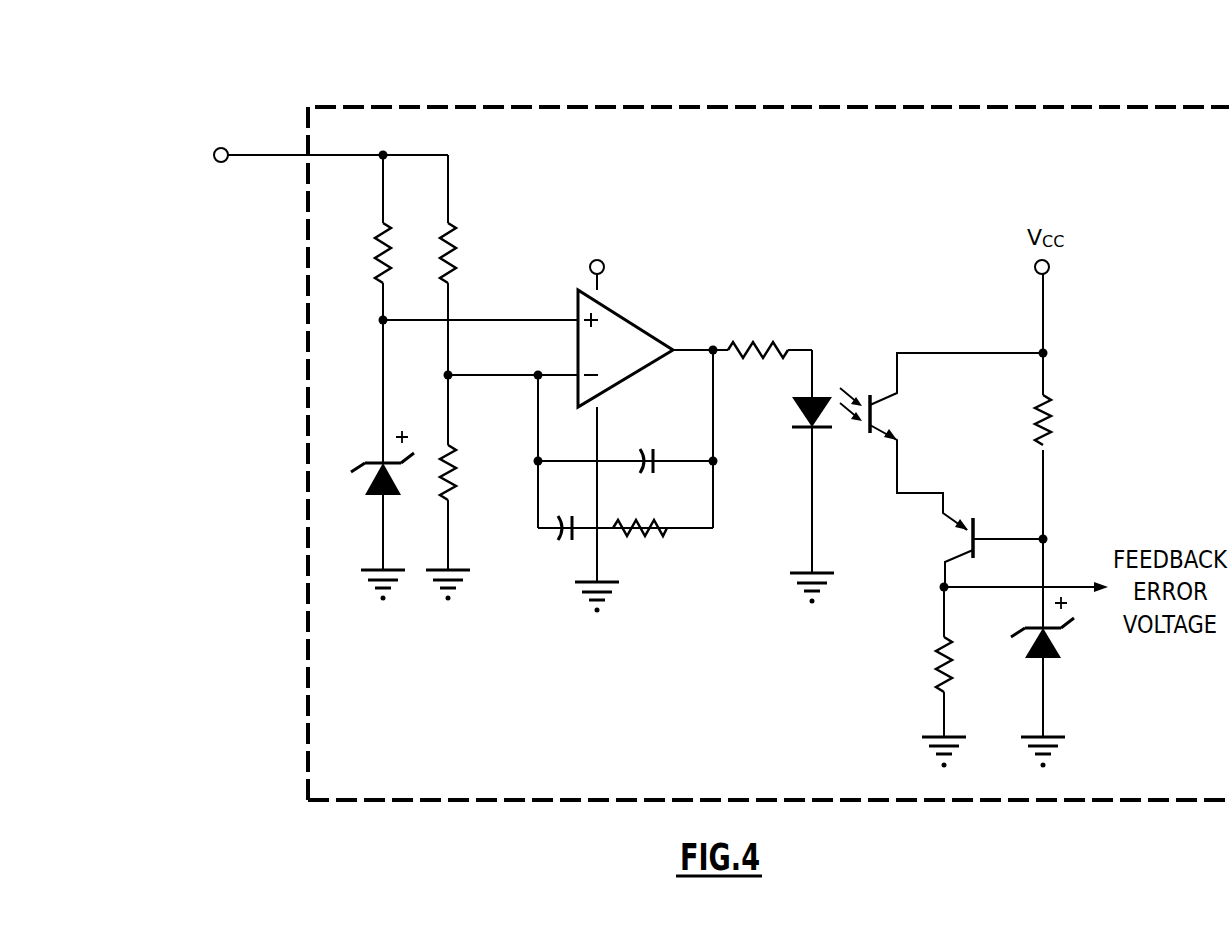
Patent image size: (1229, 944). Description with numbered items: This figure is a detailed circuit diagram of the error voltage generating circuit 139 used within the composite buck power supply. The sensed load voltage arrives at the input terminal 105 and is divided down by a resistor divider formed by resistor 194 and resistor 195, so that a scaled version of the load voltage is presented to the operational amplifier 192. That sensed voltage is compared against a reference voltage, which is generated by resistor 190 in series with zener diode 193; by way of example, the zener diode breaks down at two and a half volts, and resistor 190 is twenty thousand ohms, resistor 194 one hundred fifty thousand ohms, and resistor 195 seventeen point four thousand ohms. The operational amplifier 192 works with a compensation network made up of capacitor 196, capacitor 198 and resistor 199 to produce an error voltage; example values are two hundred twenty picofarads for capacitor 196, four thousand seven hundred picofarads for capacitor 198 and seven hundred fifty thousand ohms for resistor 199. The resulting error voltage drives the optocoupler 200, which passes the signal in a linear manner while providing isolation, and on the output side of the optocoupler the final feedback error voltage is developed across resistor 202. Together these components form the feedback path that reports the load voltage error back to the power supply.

The input terminal 105 is at (216, 150).
The error voltage generating circuit 139 is at (744, 79).
The resistor 190 is at (400, 258).
The resistor 194 is at (465, 258).
The operational amplifier 192 is at (625, 316).
The zener diode 193 is at (382, 498).
The resistor 195 is at (462, 496).
The capacitor 196 is at (651, 447).
The capacitor 198 is at (566, 541).
The resistor 199 is at (653, 538).
The optocoupler 200 is at (851, 448).
The resistor 202 is at (935, 676).